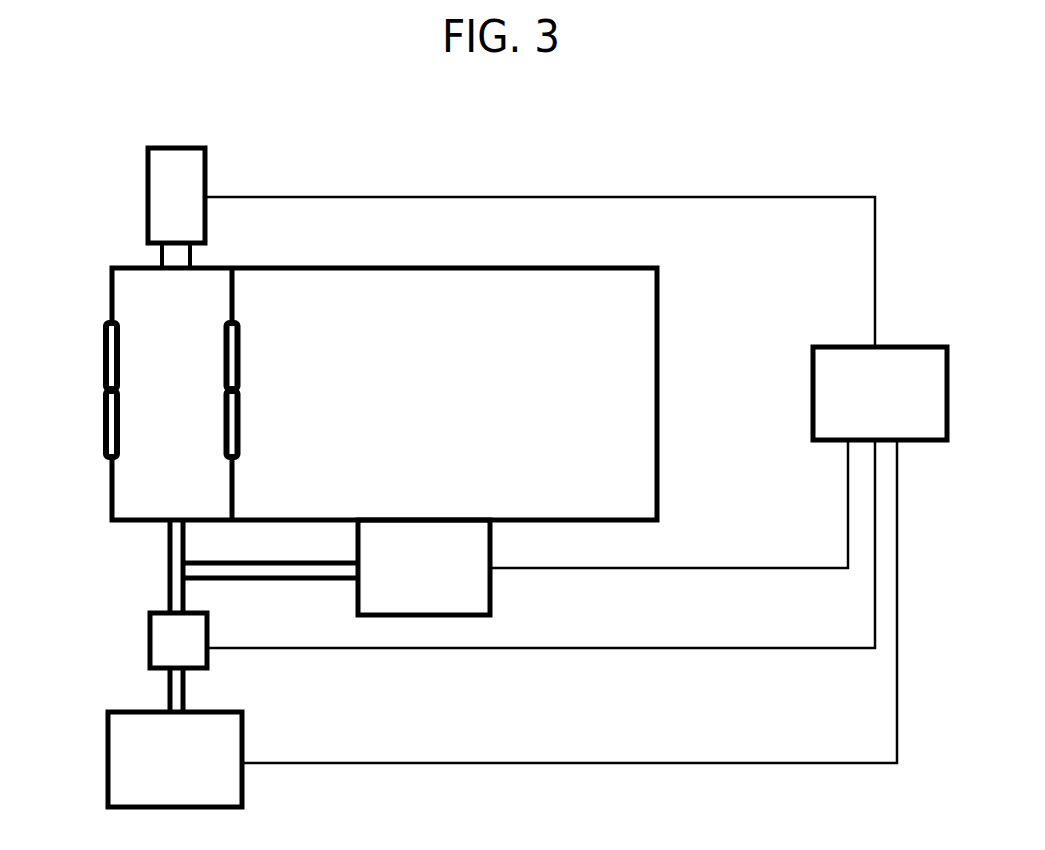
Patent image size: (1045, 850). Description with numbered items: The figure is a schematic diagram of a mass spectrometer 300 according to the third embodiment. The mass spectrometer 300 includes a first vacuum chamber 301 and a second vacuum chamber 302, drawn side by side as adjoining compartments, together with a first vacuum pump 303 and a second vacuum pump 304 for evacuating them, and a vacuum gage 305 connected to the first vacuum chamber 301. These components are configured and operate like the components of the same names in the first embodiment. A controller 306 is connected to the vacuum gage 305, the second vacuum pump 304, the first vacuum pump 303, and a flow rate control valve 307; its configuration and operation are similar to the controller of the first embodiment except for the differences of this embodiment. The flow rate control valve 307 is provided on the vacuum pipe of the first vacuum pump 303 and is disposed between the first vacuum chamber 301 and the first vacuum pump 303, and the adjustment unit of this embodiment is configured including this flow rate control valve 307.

The mass spectrometer 300 is at (755, 163).
The first vacuum chamber 301 is at (172, 394).
The second vacuum chamber 302 is at (384, 394).
The first vacuum pump 303 is at (175, 759).
The second vacuum pump 304 is at (336, 567).
The vacuum gage 305 is at (163, 206).
The controller 306 is at (880, 393).
The flow rate control valve 307 is at (163, 642).